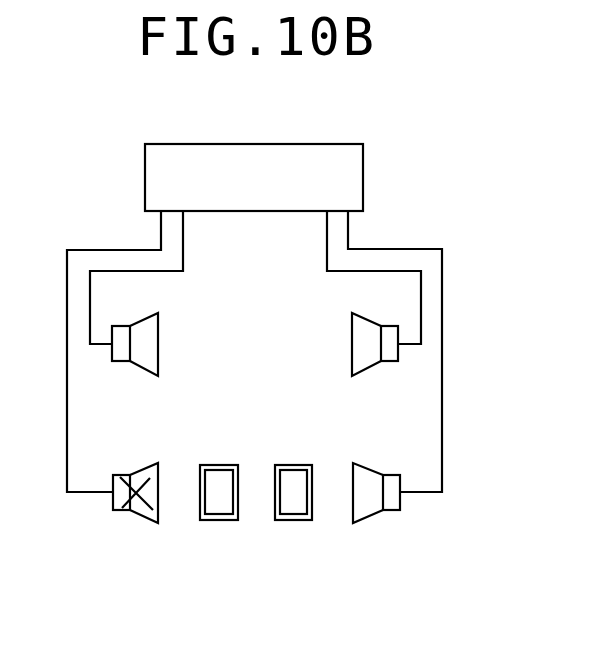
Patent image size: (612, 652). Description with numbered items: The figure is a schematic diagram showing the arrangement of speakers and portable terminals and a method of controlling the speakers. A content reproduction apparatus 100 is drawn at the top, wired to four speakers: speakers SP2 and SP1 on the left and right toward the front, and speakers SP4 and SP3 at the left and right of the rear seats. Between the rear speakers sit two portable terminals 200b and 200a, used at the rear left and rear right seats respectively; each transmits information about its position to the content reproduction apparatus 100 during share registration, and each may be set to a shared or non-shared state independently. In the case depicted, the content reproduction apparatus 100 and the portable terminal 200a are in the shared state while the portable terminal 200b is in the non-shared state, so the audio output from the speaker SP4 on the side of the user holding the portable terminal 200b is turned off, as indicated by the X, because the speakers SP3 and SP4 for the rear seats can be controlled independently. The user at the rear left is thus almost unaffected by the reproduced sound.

The content reproduction apparatus 100 is at (363, 175).
The speaker SP1 is at (372, 318).
The speaker SP2 is at (135, 318).
The speaker SP3 is at (373, 465).
The speaker SP4 is at (138, 465).
The portable terminal 200a is at (312, 516).
The portable terminal 200b is at (238, 516).